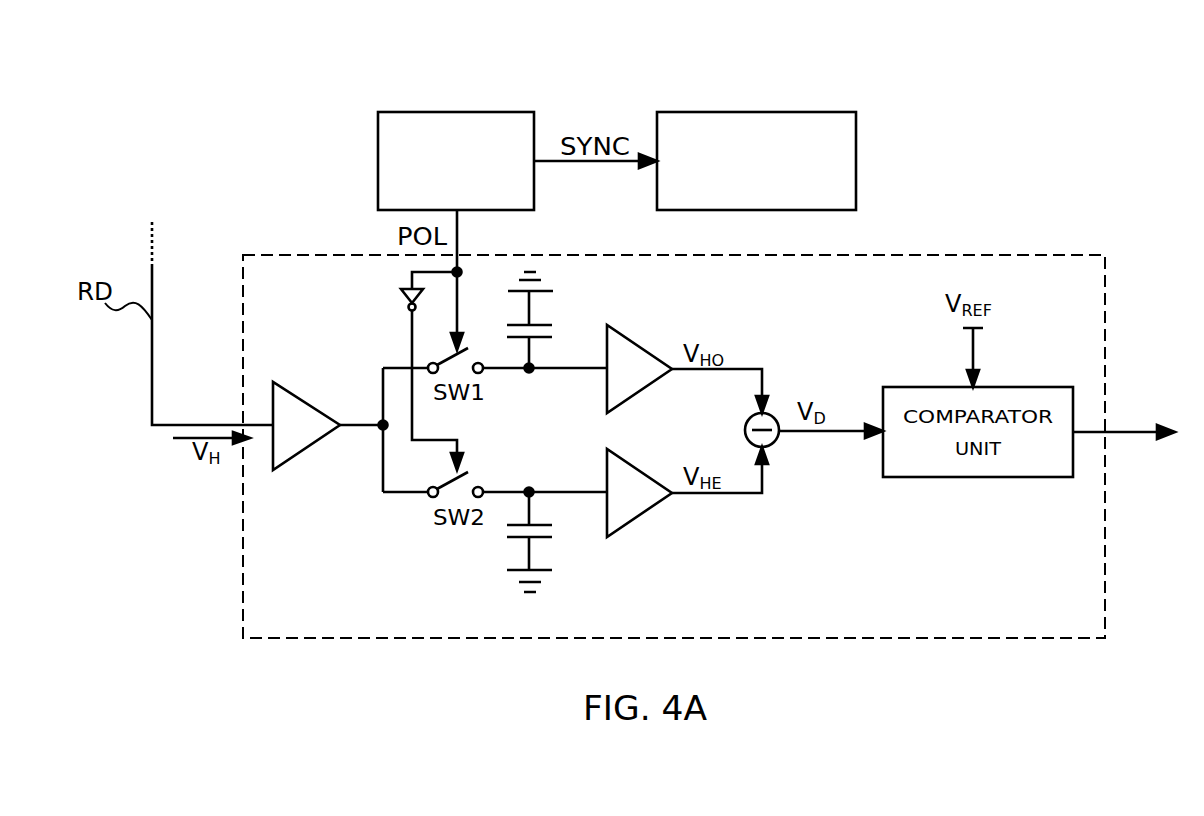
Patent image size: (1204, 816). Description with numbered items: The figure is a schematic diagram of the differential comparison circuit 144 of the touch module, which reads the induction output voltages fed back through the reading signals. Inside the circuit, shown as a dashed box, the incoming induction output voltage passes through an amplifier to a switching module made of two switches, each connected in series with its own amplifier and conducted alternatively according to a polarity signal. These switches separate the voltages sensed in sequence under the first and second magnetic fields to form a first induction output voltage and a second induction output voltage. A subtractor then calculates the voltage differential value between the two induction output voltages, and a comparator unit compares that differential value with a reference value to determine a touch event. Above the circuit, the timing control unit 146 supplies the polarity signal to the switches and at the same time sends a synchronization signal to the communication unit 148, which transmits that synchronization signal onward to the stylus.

The differential comparison circuit 144 is at (895, 255).
The timing control unit 146 is at (538, 128).
The communication unit 148 is at (773, 112).